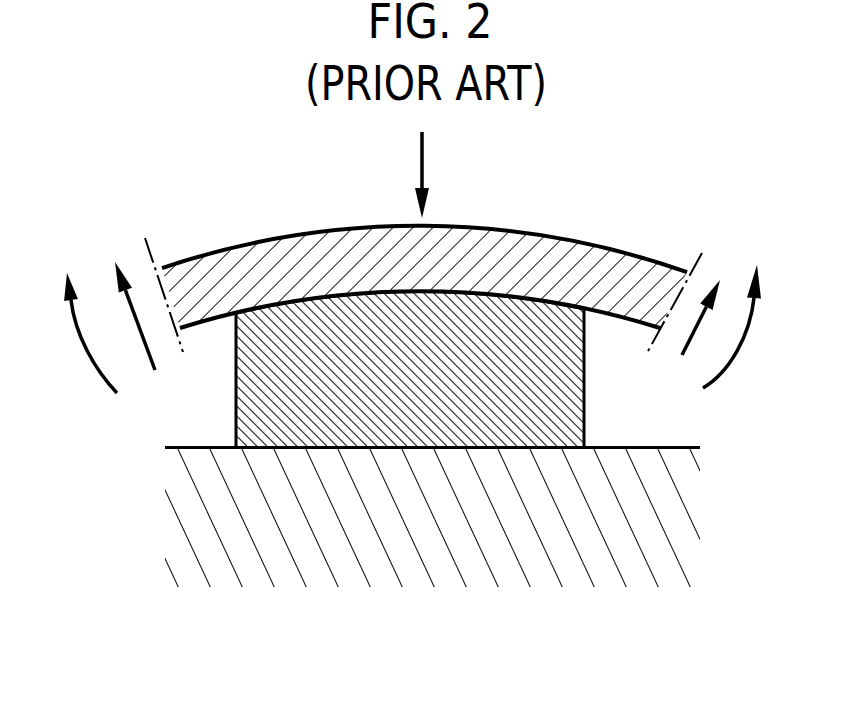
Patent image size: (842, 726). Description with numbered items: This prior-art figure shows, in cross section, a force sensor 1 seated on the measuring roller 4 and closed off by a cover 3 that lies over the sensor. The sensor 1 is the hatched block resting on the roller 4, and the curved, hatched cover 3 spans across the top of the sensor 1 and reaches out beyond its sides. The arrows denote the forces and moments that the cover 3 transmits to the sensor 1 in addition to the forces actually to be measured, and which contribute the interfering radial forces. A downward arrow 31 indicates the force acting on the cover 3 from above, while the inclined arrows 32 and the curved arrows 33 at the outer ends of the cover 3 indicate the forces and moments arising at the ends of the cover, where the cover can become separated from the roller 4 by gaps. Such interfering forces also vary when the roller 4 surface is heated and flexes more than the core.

The sensor 1 is at (475, 335).
The cover 3 is at (303, 253).
The measuring roller 4 is at (203, 520).
The applied force / pressing direction 31 is at (439, 175).
The displacement direction of plate end 32 is at (690, 353).
The bending displacement direction 33 is at (720, 377).